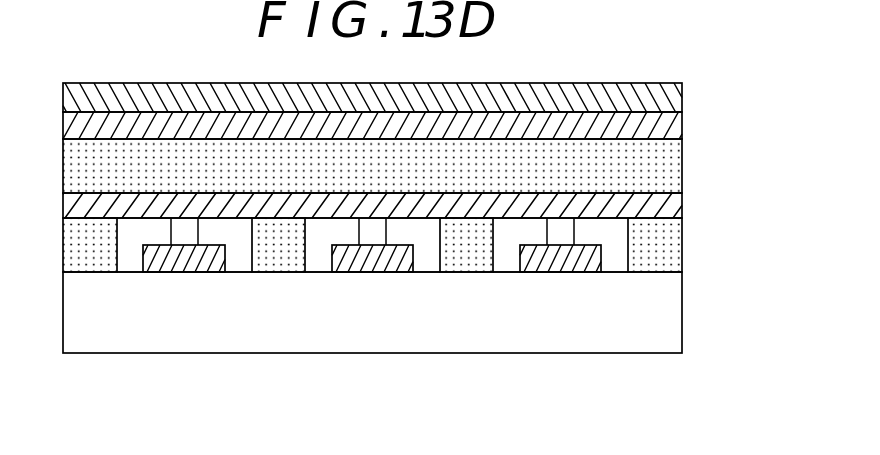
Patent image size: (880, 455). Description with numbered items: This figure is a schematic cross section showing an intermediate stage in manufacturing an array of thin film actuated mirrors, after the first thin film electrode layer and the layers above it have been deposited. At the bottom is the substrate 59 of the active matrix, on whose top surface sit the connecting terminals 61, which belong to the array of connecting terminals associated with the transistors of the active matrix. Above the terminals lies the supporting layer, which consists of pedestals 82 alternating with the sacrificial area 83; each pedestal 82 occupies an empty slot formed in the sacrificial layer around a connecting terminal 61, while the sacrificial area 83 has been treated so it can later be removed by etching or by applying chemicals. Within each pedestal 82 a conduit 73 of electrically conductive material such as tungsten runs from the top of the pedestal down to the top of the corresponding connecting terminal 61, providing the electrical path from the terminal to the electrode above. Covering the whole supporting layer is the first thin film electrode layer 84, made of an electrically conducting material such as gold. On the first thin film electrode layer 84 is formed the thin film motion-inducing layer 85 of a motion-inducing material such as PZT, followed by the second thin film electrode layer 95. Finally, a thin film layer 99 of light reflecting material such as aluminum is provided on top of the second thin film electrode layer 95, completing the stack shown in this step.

The substrate 59 is at (600, 340).
The connecting terminal 61 is at (362, 260).
The conduit 73 is at (368, 230).
The pedestal 82 is at (424, 260).
The sacrificial area 83 is at (472, 260).
The first thin film electrode layer 84 is at (670, 207).
The thin film motion-inducing layer 85 is at (670, 168).
The second thin film electrode layer 95 is at (670, 127).
The thin film layer of light reflecting material 99 is at (670, 100).